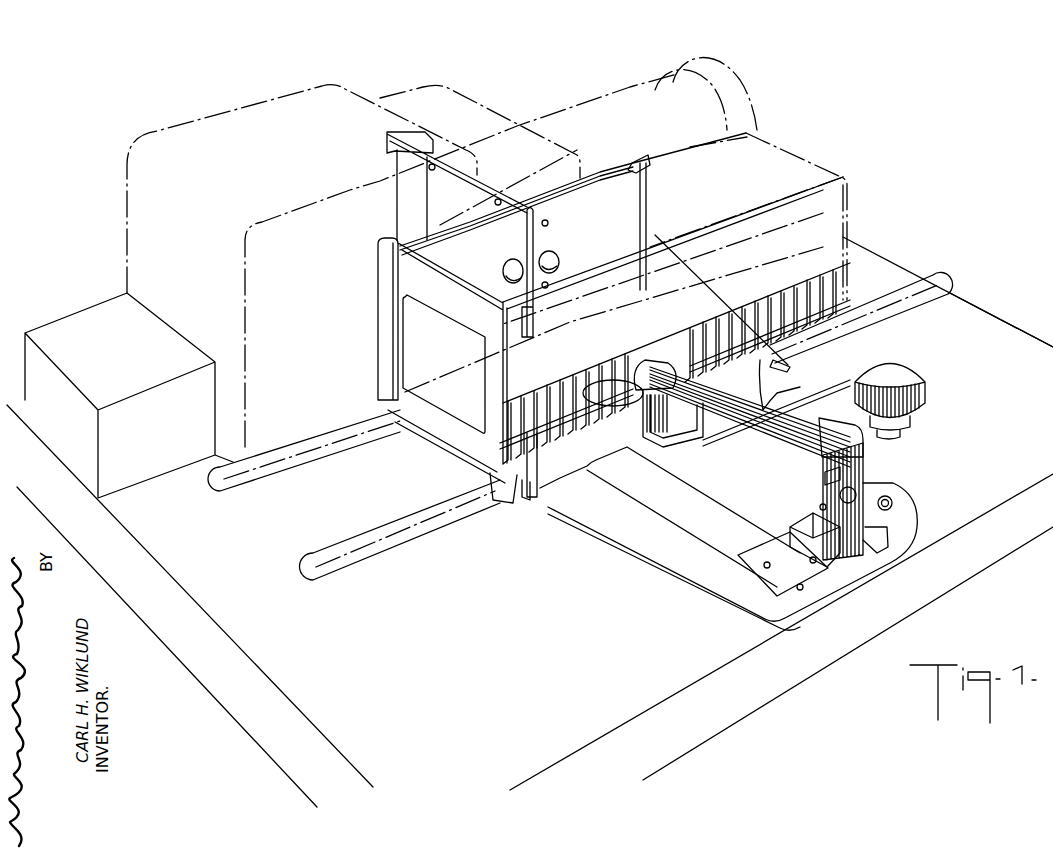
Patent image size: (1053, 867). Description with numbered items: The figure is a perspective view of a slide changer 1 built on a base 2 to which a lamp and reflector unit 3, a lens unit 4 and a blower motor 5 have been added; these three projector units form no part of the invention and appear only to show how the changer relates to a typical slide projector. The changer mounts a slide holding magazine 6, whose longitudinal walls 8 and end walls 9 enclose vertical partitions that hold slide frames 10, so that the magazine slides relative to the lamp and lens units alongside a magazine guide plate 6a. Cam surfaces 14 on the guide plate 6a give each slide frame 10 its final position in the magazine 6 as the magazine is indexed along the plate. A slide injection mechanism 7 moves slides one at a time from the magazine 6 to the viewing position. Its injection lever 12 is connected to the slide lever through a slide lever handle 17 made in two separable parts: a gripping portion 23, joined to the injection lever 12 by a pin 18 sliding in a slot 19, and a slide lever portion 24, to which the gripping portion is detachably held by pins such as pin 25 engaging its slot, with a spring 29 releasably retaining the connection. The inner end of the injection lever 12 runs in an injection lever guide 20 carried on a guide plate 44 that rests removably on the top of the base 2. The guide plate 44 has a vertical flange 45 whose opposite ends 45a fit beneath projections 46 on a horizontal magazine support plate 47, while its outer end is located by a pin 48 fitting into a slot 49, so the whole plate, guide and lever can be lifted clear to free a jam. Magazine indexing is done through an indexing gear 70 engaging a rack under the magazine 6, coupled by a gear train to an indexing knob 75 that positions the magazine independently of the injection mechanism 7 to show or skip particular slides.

The slide changer 1 is at (924, 270).
The base 2 is at (1030, 327).
The lamp and reflector unit 3 is at (260, 115).
The lens unit 4 is at (597, 108).
The blower motor 5 is at (108, 308).
The slide holding magazine 6 is at (815, 168).
The magazine guide plate 6a is at (608, 165).
The slide injection mechanism 7 is at (798, 422).
The longitudinal walls 8 is at (752, 153).
The end walls 9 is at (403, 277).
The slide frames 10 is at (822, 277).
The injection lever 12 is at (711, 406).
The cam surfaces 14 is at (541, 255).
The slide lever handle 17 is at (809, 487).
The pin 18 is at (856, 487).
The slot 19 is at (822, 472).
The injection lever guide 20 is at (643, 430).
The gripping portion 23 is at (863, 465).
The slide lever portion 24 is at (860, 523).
The pin 25 is at (820, 508).
The spring 29 is at (823, 540).
The guide plate 44 is at (660, 550).
The vertical flange 45 is at (557, 473).
The flange ends 45a is at (525, 500).
The projections 46 is at (533, 487).
The horizontal magazine support plate 47 is at (490, 478).
The pin 48 is at (898, 503).
The slot 49 is at (903, 497).
The indexing gear 70 is at (600, 383).
The indexing knob 75 is at (908, 378).